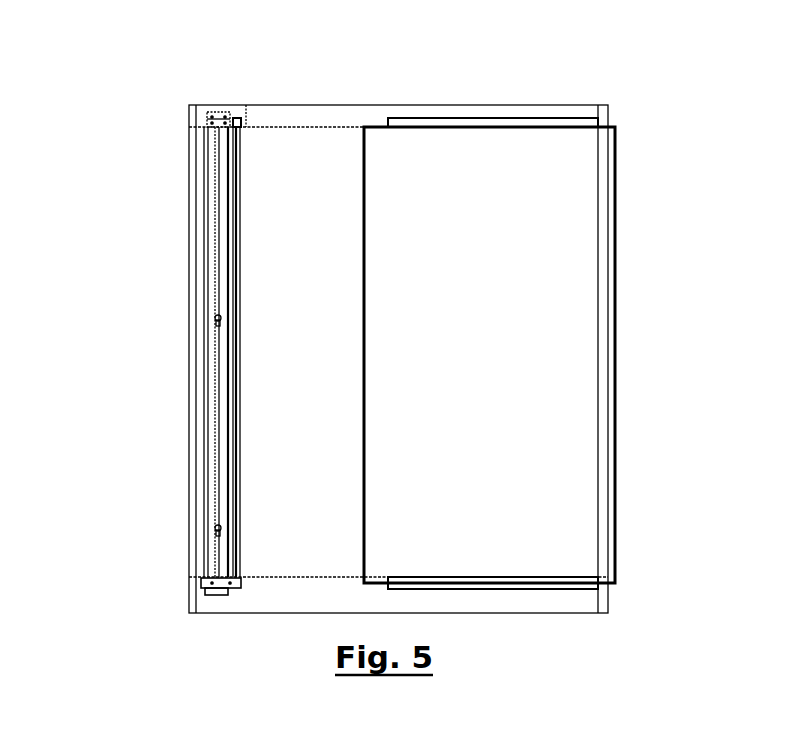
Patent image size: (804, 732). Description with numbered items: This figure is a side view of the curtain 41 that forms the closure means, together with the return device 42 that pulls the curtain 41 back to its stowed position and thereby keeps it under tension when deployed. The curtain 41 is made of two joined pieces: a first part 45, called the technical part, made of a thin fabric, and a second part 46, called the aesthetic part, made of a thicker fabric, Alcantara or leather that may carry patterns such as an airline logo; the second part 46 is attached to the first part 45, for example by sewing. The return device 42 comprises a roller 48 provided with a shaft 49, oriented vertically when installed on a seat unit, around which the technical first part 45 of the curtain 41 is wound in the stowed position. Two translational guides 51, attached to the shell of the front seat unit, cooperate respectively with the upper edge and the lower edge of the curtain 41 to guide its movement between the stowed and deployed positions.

The curtain 41 is at (518, 272).
The return device 42 is at (184, 126).
The first part 45 is at (273, 358).
The second part 46 is at (522, 458).
The roller 48 is at (218, 124).
The shaft 49 is at (218, 484).
The translational guides 51 is at (520, 123).